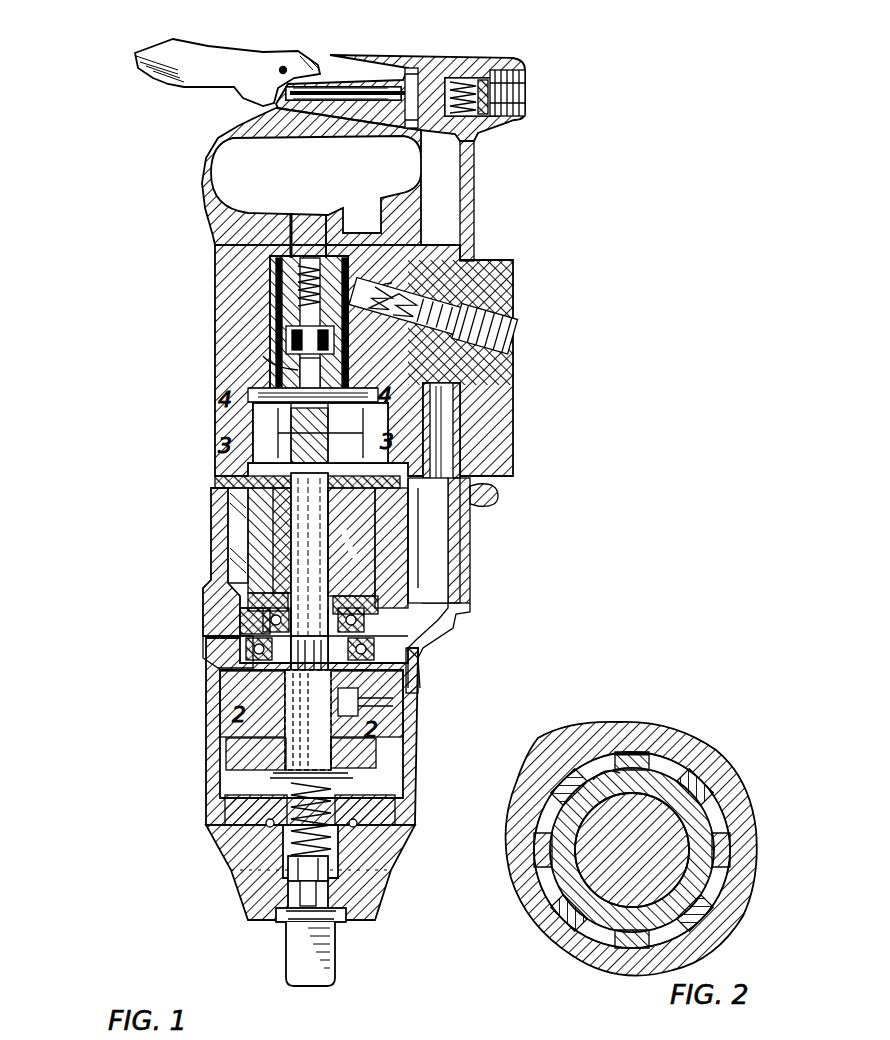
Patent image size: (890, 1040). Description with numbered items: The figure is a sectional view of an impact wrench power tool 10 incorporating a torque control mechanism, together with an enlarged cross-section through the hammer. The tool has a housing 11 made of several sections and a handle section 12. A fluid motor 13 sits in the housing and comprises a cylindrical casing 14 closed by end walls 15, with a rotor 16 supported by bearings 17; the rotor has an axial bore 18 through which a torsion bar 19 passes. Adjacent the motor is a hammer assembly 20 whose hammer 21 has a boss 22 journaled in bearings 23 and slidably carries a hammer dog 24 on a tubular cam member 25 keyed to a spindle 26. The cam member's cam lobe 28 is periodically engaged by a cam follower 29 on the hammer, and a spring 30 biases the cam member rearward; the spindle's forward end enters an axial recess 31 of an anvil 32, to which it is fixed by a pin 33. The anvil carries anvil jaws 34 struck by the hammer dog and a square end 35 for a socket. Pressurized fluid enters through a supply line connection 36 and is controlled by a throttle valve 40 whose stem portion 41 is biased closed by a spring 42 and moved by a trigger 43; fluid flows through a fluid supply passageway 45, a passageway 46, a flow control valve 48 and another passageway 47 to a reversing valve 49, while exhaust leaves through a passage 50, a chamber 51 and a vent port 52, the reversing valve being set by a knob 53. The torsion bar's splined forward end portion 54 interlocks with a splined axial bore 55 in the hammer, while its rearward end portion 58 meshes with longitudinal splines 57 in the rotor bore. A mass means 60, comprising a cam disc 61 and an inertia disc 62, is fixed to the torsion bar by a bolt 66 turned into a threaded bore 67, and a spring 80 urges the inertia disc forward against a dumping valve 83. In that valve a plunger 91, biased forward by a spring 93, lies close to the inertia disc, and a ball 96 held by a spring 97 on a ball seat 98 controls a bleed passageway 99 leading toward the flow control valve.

In FIG. 1, the impact wrench power tool 10 is at (102, 472).
In FIG. 1, the housing 11 is at (200, 595).
In FIG. 1, the handle section 12 is at (198, 160).
In FIG. 1, the fluid motor 13 is at (208, 518).
In FIG. 1, the cylindrical casing 14 is at (215, 498).
In FIG. 1, the end walls 15 is at (205, 470).
In FIG. 1, the rotor 16 is at (240, 538).
In FIG. 1, the bearings 17 is at (222, 466).
In FIG. 1, the axial bore 18 is at (298, 528).
In FIG. 1, the torsion bar 19 is at (308, 565).
In FIG. 2, the torsion bar 19 is at (560, 870).
In FIG. 1, the hammer assembly 20 is at (201, 707).
In FIG. 1, the hammer 21 is at (230, 680).
In FIG. 2, the hammer 21 is at (700, 750).
In FIG. 1, the boss 22 is at (243, 618).
In FIG. 1, the bearings 23 is at (230, 648).
In FIG. 1, the hammer dog 24 is at (240, 778).
In FIG. 1, the tubular cam member 25 is at (350, 770).
In FIG. 1, the spindle 26 is at (355, 740).
In FIG. 2, the spindle 26 is at (665, 860).
In FIG. 1, the cam lobe 28 is at (265, 735).
In FIG. 1, the cam follower 29 is at (412, 652).
In FIG. 1, the spring 30 is at (330, 845).
In FIG. 1, the axial recess 31 is at (280, 840).
In FIG. 1, the anvil 32 is at (255, 873).
In FIG. 1, the pin 33 is at (288, 908).
In FIG. 1, the anvil jaws 34 is at (230, 810).
In FIG. 1, the square end 35 is at (292, 968).
In FIG. 1, the pressure fluid supply line connection 36 is at (518, 84).
In FIG. 1, the throttle valve 40 is at (437, 62).
In FIG. 1, the stem portion 41 is at (340, 78).
In FIG. 1, the spring 42 is at (460, 68).
In FIG. 1, the trigger 43 is at (176, 66).
In FIG. 1, the fluid supply passageway 45 is at (440, 168).
In FIG. 1, the passageway 46 is at (445, 282).
In FIG. 1, the passageway 47 is at (487, 387).
In FIG. 1, the flow control valve 48 is at (504, 326).
In FIG. 1, the reversing valve 49 is at (447, 540).
In FIG. 1, the passage 50 is at (440, 566).
In FIG. 1, the chamber 51 is at (442, 600).
In FIG. 1, the vent port 52 is at (430, 620).
In FIG. 1, the knob 53 is at (492, 488).
In FIG. 1, the splined forward end portion 54 is at (309, 648).
In FIG. 2, the splined forward end portion 54 is at (641, 742).
In FIG. 2, the axial bore 55 is at (594, 760).
In FIG. 1, the longitudinal splines 57 is at (322, 574).
In FIG. 1, the rearward end portion 58 is at (351, 542).
In FIG. 1, the mass means 60 is at (243, 402).
In FIG. 1, the cam disc 61 is at (248, 425).
In FIG. 1, the inertia disc 62 is at (240, 356).
In FIG. 1, the bolt 66 is at (357, 544).
In FIG. 1, the threaded bore 67 is at (285, 490).
In FIG. 1, the spring 80 is at (348, 380).
In FIG. 1, the dumping valve 83 is at (252, 345).
In FIG. 1, the plunger 91 is at (364, 360).
In FIG. 1, the spring 93 is at (328, 326).
In FIG. 1, the ball 96 is at (388, 277).
In FIG. 1, the spring 97 is at (300, 250).
In FIG. 1, the ball seat 98 is at (282, 252).
In FIG. 1, the bleed passageway 99 is at (318, 250).